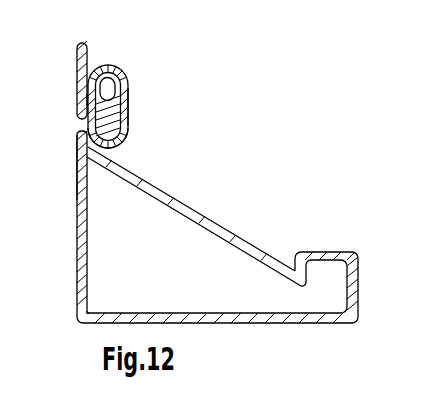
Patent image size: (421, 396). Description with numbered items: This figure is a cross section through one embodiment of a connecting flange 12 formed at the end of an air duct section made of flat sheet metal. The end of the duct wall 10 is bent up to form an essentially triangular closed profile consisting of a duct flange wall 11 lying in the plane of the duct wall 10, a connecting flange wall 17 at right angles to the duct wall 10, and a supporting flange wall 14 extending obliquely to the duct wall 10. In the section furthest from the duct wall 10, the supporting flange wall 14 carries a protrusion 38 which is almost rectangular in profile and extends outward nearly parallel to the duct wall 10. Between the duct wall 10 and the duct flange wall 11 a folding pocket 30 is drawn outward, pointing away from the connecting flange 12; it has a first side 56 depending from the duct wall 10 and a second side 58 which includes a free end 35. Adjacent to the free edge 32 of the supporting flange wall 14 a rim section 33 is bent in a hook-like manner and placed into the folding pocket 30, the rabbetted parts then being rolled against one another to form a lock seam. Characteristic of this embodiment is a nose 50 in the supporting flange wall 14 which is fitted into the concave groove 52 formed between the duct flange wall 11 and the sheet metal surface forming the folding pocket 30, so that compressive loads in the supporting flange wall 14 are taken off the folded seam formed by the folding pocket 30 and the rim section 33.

The duct wall 10 is at (78, 63).
The duct flange wall 11 is at (77, 246).
The connecting flange 12 is at (79, 324).
The supporting flange wall 14 is at (186, 203).
The connecting flange wall 17 is at (226, 324).
The folding pocket 30 is at (81, 113).
The free edge 32 is at (117, 101).
The rim section 33 is at (118, 70).
The free end 35 is at (106, 77).
The protrusion 38 is at (322, 252).
The nose 50 is at (116, 148).
The concave groove 52 is at (78, 134).
The first side 56 is at (90, 100).
The second side 58 is at (129, 114).